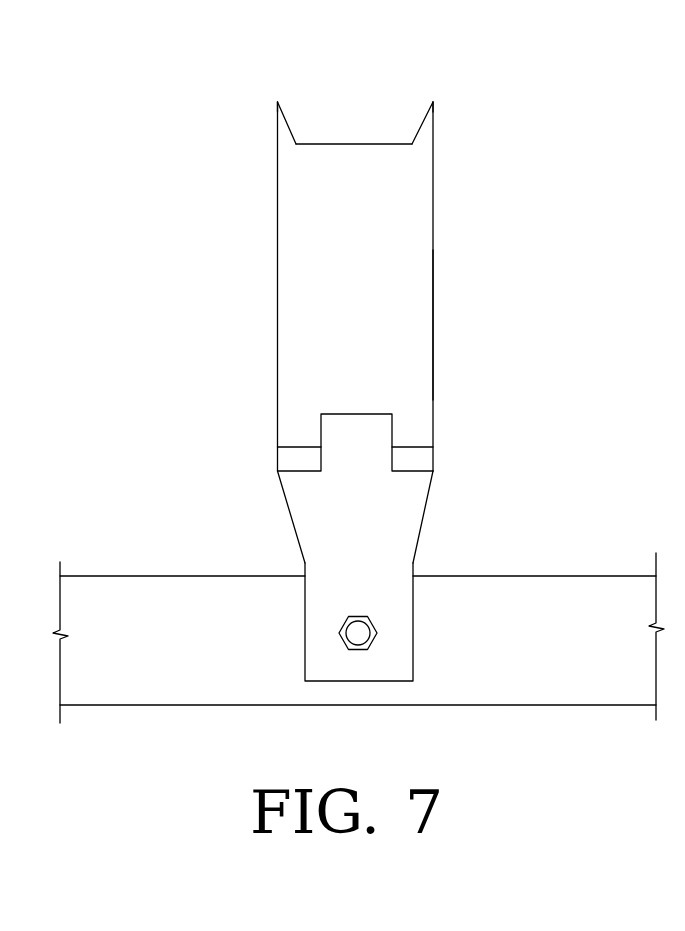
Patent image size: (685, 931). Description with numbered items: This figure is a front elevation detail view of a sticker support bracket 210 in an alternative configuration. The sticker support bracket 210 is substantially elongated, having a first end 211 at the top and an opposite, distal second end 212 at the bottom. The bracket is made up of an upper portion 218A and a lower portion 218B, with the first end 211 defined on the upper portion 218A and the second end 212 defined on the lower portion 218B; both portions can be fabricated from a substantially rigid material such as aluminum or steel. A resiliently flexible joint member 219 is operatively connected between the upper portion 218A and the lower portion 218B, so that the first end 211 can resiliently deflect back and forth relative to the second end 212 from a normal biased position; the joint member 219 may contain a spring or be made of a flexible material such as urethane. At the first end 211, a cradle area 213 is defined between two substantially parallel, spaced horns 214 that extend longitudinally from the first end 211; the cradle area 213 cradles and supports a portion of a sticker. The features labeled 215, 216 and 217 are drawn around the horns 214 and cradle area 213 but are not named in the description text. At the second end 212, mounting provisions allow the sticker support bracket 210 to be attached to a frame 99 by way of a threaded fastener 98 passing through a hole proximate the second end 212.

The sticker support bracket 210 is at (194, 313).
The first end 211 is at (433, 193).
The second end 212 is at (413, 665).
The cradle area 213 is at (355, 126).
The horns 214 is at (277, 122).
The recess bottom 215 is at (320, 144).
The side walls 216 is at (277, 243).
The upper tips 217 is at (283, 103).
The upper portion 218A is at (418, 310).
The lower portion 218B is at (411, 513).
The joint member 219 is at (434, 434).
The threaded fastener 98 is at (358, 621).
The frame 99 is at (567, 580).